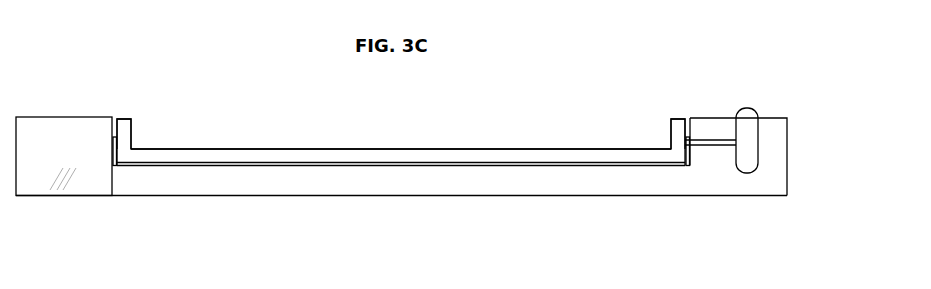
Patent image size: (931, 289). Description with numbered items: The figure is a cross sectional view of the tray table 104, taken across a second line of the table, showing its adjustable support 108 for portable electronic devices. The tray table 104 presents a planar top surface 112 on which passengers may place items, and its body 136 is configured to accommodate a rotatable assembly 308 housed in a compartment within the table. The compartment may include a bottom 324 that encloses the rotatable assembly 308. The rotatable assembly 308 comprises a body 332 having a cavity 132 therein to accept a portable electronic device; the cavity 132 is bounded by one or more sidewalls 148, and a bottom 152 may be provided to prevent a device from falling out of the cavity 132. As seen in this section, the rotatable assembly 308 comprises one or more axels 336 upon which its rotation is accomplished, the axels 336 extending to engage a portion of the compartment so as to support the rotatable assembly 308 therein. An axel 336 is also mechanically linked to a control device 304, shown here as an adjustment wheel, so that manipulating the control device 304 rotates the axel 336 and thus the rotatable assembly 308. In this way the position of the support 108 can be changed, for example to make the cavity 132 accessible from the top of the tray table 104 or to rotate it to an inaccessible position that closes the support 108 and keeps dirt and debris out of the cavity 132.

The tray table 104 is at (630, 225).
The support 108 is at (490, 172).
The planar top surface 112 is at (64, 135).
The cavity 132 is at (497, 107).
The body 136 is at (61, 156).
The sidewalls 148 is at (131, 120).
The bottom 152 is at (254, 149).
The control device 304 is at (747, 110).
The rotatable assembly 308 is at (668, 92).
The bottom 324 is at (379, 164).
The body 332 is at (292, 163).
The axels 336 is at (113, 165).